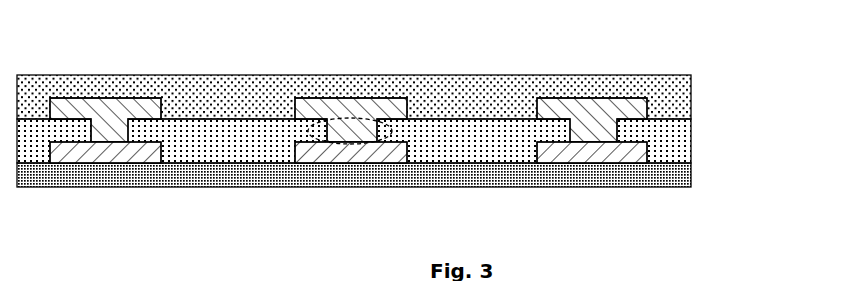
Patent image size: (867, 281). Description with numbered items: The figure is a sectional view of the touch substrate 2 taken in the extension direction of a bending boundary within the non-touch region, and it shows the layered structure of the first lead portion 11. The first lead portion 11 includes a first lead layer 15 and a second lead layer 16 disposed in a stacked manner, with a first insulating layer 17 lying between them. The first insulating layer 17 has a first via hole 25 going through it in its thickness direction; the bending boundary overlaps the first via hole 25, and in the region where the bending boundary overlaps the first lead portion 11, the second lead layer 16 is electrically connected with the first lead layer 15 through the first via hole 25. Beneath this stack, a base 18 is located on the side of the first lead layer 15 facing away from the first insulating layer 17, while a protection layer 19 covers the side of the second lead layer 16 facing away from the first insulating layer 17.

The touch substrate 2 is at (440, 104).
The first lead portion 11 is at (432, 132).
The first lead layer 15 is at (691, 153).
The second lead layer 16 is at (691, 110).
The first insulating layer 17 is at (691, 133).
The base 18 is at (691, 175).
The protection layer 19 is at (691, 88).
The first via hole 25 is at (363, 117).